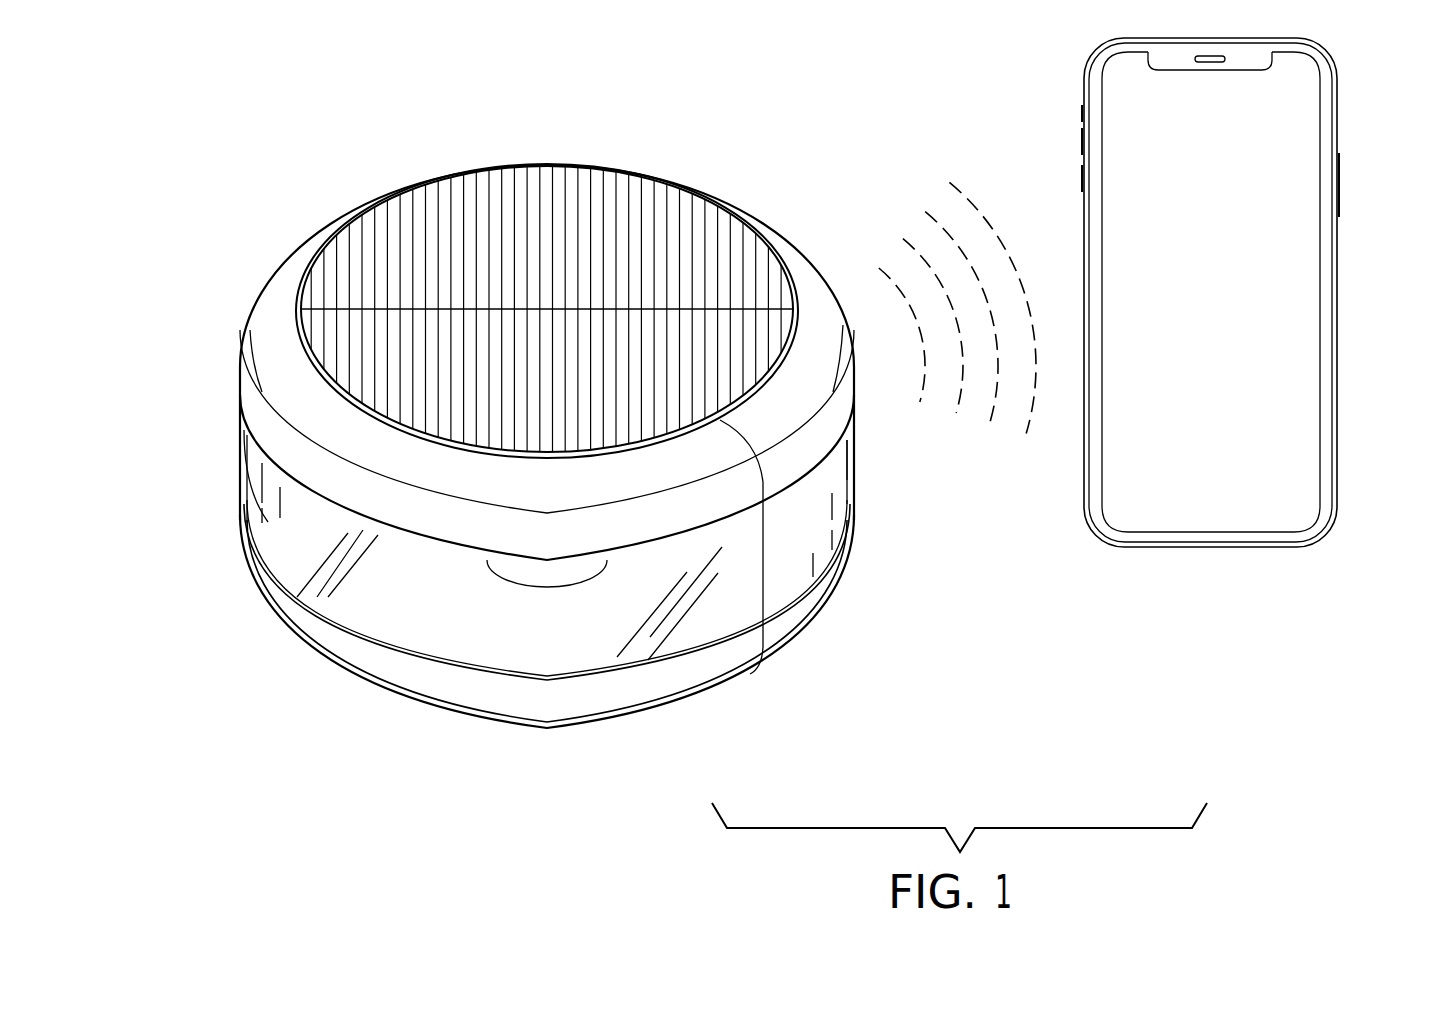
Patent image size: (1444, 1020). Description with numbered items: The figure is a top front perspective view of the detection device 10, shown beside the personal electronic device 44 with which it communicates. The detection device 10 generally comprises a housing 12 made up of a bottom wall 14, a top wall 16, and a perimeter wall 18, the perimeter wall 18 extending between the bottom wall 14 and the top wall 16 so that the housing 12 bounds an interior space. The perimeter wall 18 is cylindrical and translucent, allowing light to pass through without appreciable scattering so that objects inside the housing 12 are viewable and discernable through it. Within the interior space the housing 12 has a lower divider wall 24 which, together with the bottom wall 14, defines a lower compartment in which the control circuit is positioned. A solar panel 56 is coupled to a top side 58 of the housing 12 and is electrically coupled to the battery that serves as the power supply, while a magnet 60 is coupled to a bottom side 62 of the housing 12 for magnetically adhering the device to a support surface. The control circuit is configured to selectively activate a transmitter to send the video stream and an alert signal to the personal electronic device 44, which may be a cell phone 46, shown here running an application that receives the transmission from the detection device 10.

The detection device 10 is at (714, 111).
The housing 12 is at (210, 410).
The bottom wall 14 is at (527, 703).
The top wall 16 is at (285, 282).
The perimeter wall 18 is at (283, 516).
The lower divider wall 24 is at (603, 645).
The personal electronic device 44 is at (1248, 487).
The cell phone 46 is at (1283, 318).
The solar panel 56 is at (535, 205).
The top side 58 is at (787, 258).
The magnet 60 is at (453, 720).
The bottom side 62 is at (382, 697).